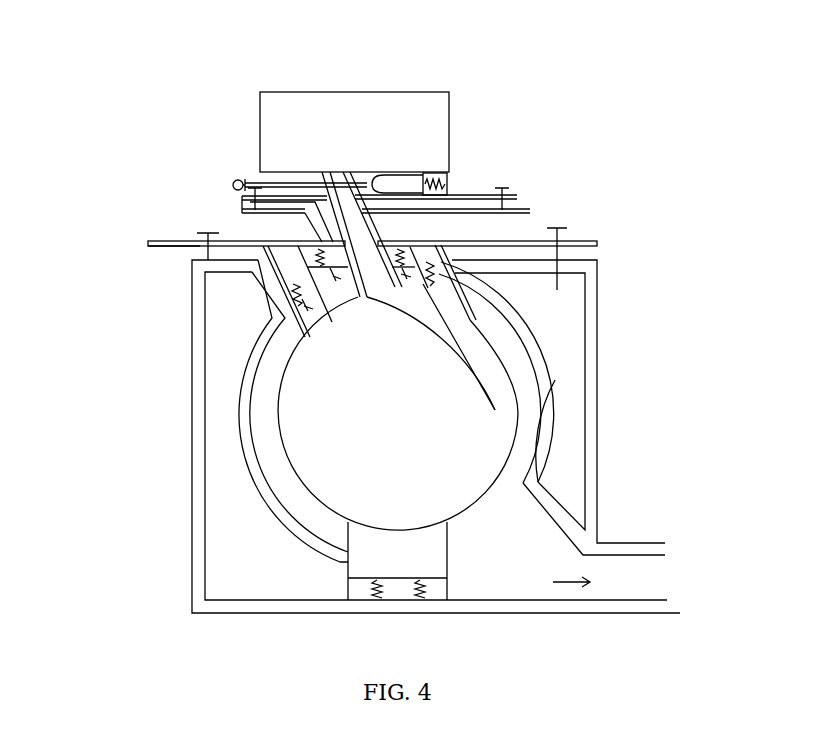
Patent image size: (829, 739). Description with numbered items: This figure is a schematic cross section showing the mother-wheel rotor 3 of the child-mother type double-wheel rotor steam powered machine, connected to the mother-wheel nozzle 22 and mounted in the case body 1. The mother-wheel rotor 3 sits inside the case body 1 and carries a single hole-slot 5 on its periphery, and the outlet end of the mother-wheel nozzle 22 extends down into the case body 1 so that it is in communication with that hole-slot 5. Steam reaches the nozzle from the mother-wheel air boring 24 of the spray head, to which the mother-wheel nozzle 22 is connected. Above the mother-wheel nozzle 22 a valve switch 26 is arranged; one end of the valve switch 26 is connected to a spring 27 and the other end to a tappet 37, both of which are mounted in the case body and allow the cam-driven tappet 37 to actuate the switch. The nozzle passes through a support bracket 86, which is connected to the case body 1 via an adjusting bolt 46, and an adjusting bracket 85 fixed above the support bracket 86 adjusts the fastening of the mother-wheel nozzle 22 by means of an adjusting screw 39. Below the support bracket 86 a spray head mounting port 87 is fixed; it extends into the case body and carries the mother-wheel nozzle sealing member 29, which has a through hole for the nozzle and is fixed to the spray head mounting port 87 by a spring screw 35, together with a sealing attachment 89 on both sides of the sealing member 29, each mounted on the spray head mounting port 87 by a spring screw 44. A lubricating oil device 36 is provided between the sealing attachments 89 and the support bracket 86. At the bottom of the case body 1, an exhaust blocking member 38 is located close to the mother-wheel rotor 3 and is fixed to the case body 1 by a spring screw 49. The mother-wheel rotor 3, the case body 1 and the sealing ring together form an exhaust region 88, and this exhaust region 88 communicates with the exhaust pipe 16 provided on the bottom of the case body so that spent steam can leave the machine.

The case body 1 is at (195, 503).
The mother-wheel rotor 3 is at (520, 432).
The hole-slot 5 is at (465, 338).
The exhaust pipe 16 is at (608, 587).
The mother-wheel nozzle 22 is at (357, 250).
The mother-wheel air boring 24 is at (333, 133).
The valve switch 26 is at (407, 186).
The spring 27 is at (447, 186).
The mother-wheel nozzle sealing member 29 is at (430, 296).
The spring screw 35 is at (440, 243).
The lubricating oil device 36 is at (287, 267).
The tappet 37 is at (292, 183).
The exhaust blocking member 38 is at (393, 545).
The adjusting screw 39 is at (306, 232).
The spring screw 44 is at (290, 300).
The adjusting bolt 46 is at (198, 233).
The spring screw 49 is at (384, 578).
The adjusting bracket 85 is at (280, 211).
The support bracket 86 is at (170, 247).
The spray head mounting port 87 is at (455, 287).
The exhaust region 88 is at (530, 408).
The sealing attachment 89 is at (303, 322).